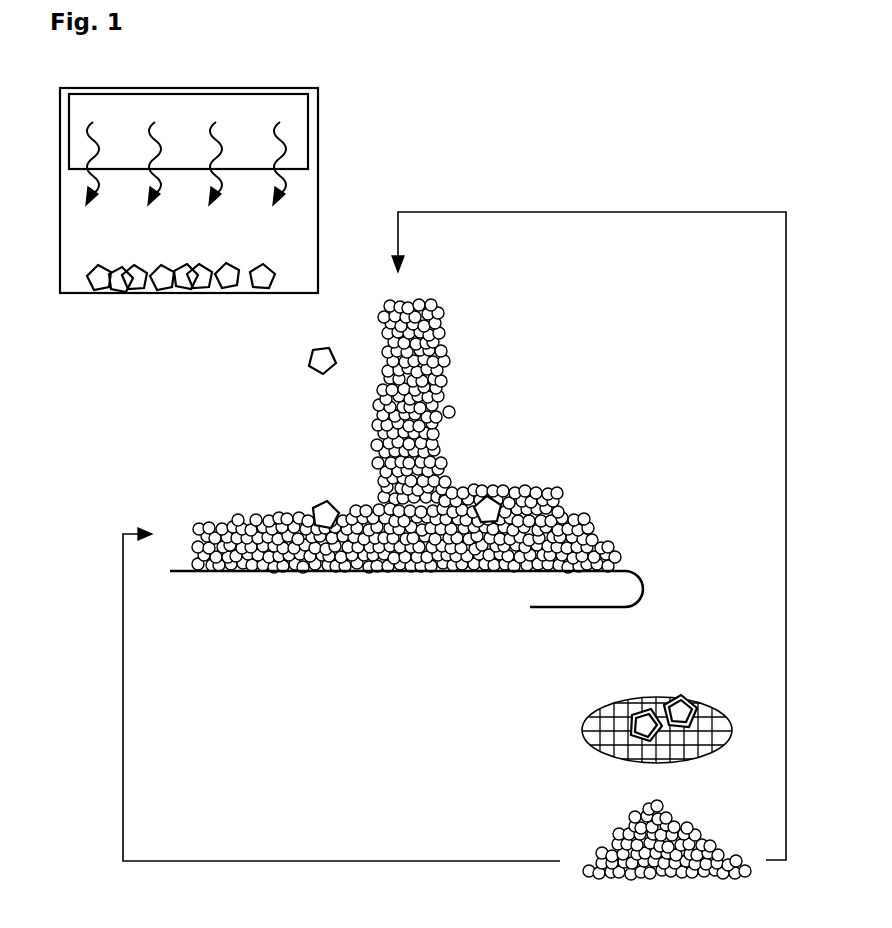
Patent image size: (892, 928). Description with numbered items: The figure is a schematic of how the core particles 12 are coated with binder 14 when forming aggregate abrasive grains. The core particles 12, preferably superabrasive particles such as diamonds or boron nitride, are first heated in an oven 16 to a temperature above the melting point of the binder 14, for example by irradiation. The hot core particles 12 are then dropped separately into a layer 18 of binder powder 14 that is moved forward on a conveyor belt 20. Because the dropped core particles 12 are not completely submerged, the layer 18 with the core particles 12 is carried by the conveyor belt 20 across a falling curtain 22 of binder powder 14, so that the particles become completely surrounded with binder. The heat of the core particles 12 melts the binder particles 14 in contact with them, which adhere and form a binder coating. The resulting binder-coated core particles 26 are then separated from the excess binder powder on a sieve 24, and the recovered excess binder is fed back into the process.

The core particles 12 is at (135, 260).
The binder powder 14 is at (450, 418).
The oven 16 is at (321, 178).
The layer of binder powder 18 is at (194, 490).
The conveyor belt 20 is at (496, 575).
The curtain of binder powder 22 is at (463, 362).
The mesh / sieve 24 is at (598, 714).
The binder-coated core particles 26 is at (666, 696).